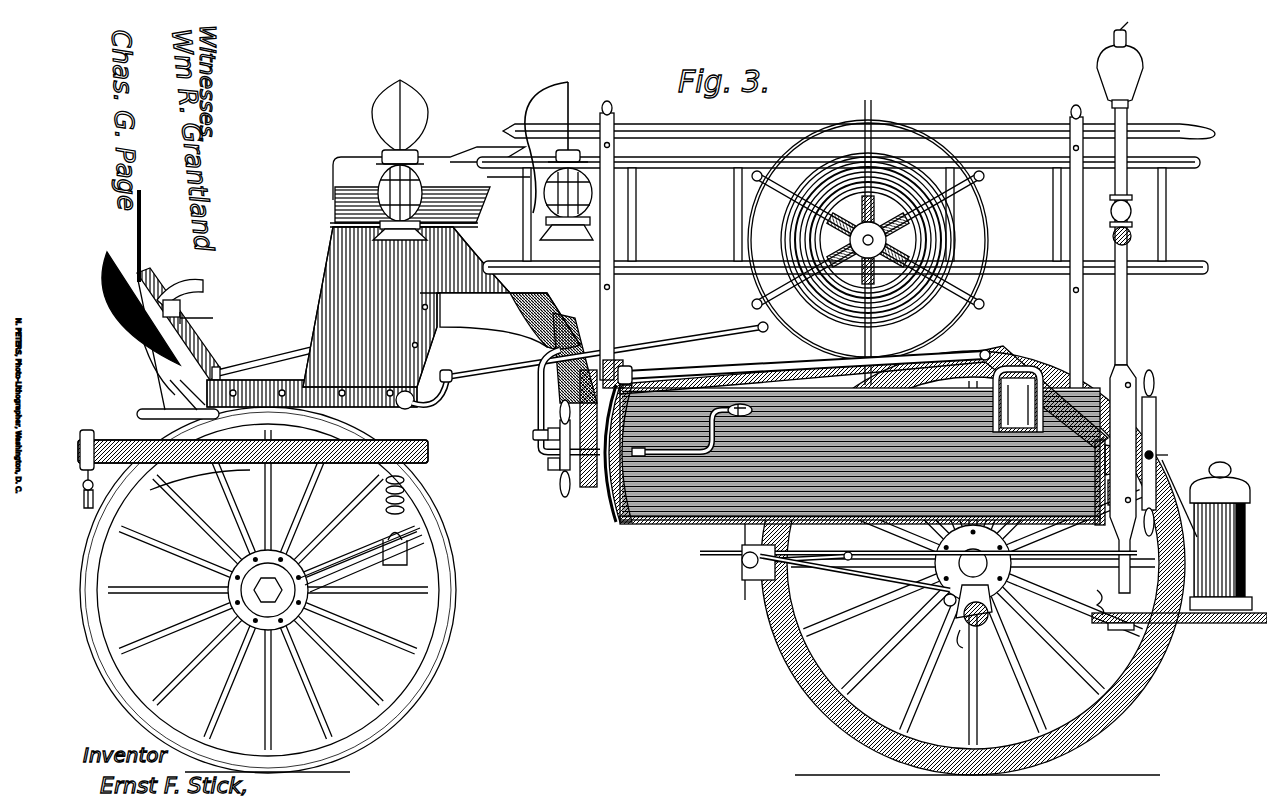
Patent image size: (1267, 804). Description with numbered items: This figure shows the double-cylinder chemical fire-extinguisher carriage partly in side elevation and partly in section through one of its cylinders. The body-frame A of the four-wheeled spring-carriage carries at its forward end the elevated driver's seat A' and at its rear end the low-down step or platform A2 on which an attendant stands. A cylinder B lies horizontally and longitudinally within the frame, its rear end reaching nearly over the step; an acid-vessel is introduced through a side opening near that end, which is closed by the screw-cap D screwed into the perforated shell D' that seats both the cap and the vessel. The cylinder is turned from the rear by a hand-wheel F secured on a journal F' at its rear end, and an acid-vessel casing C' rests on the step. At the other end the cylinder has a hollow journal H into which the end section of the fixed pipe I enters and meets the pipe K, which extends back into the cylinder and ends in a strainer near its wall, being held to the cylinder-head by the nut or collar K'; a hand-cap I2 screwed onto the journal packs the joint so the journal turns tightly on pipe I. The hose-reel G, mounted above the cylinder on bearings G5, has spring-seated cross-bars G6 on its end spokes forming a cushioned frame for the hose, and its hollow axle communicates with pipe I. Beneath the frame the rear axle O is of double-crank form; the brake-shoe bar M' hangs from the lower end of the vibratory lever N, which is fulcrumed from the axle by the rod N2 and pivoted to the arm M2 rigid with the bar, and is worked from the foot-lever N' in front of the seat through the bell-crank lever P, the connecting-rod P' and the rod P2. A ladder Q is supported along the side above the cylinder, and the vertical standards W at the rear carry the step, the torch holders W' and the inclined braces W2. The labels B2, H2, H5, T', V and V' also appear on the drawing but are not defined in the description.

The body-frame A is at (508, 346).
The driver's seat A' is at (408, 233).
The low-down step or platform A2 is at (1179, 620).
The cylinder B is at (855, 435).
The boiler shell B2 is at (1000, 442).
The casing C' is at (1228, 536).
The screw-cap D is at (1018, 386).
The perforated shell D' is at (1018, 403).
The hand-wheel F is at (1162, 453).
The journal F' is at (1163, 440).
The hose reel G is at (874, 242).
The bearings for the reel-axle G5 is at (800, 220).
The spring-seated cross-bars G6 is at (864, 240).
The hollow journal H is at (582, 442).
The flange H2 is at (592, 442).
The rear flange H5 is at (1098, 380).
The fixed pipe I is at (554, 425).
The hand-cap I2 is at (556, 478).
The pipe K is at (690, 443).
The nut or collar K' is at (636, 465).
The brake-shoe bar M' is at (776, 572).
The arm M2 is at (745, 545).
The vibratory lever N is at (804, 367).
The foot-lever N' is at (168, 297).
The fulcrum-rod N2 is at (885, 578).
The rear axle O is at (968, 619).
The bell-crank lever P is at (421, 402).
The connecting-rod P' is at (604, 352).
The rod P2 is at (268, 358).
The ladder Q is at (846, 191).
The post T' is at (841, 256).
The pole V is at (859, 124).
The post knob V' is at (841, 104).
The vertical standards W is at (1131, 307).
The torch holders W' is at (1131, 65).
The inclined braces W2 is at (1183, 496).